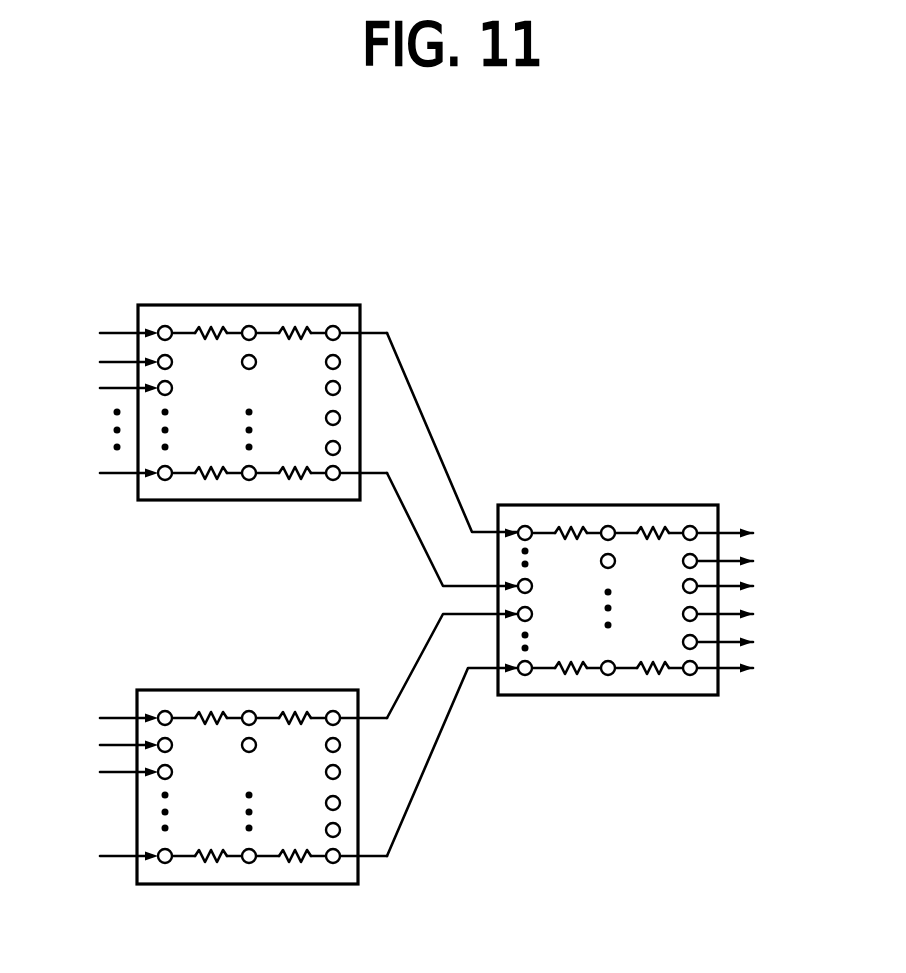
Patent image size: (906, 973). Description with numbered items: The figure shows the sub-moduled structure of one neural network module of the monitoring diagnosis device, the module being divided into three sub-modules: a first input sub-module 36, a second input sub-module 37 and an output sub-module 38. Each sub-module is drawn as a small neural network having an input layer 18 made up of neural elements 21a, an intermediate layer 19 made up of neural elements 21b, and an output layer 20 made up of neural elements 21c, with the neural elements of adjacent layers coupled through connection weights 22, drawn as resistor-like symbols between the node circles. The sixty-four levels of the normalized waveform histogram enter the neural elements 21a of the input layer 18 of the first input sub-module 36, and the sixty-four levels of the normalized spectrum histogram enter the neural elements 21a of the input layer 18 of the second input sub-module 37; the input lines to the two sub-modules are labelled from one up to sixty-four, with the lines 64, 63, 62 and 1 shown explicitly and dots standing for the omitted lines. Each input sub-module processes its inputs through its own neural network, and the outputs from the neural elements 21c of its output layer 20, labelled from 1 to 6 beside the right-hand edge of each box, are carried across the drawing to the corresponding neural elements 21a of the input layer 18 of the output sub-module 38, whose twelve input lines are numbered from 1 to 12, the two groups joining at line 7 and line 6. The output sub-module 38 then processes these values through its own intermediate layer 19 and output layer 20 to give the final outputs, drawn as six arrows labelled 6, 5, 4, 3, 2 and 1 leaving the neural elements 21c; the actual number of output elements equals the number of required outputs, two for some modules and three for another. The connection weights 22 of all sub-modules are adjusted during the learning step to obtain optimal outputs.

The first input sub-module 36 is at (307, 295).
The second input sub-module 37 is at (290, 690).
The output sub-module 38 is at (649, 500).
The input layer 18 is at (163, 316).
The intermediate layer 19 is at (250, 316).
The output layer 20 is at (335, 314).
The connection weights 22 is at (213, 327).
The neural elements of the input layer 21a is at (166, 481).
The neural elements of the intermediate layer 21b is at (250, 481).
The neural elements of the output layer 21c is at (334, 481).
The input line 64 is at (79, 526).
The input line 63 is at (79, 554).
The input line 62 is at (79, 580).
The line 1 is at (429, 676).
The line 6 is at (574, 545).
The line 7 is at (457, 570).
The line 12 is at (488, 551).
The output line 5 is at (772, 561).
The output line 4 is at (772, 586).
The output line 3 is at (772, 614).
The output line 2 is at (772, 642).